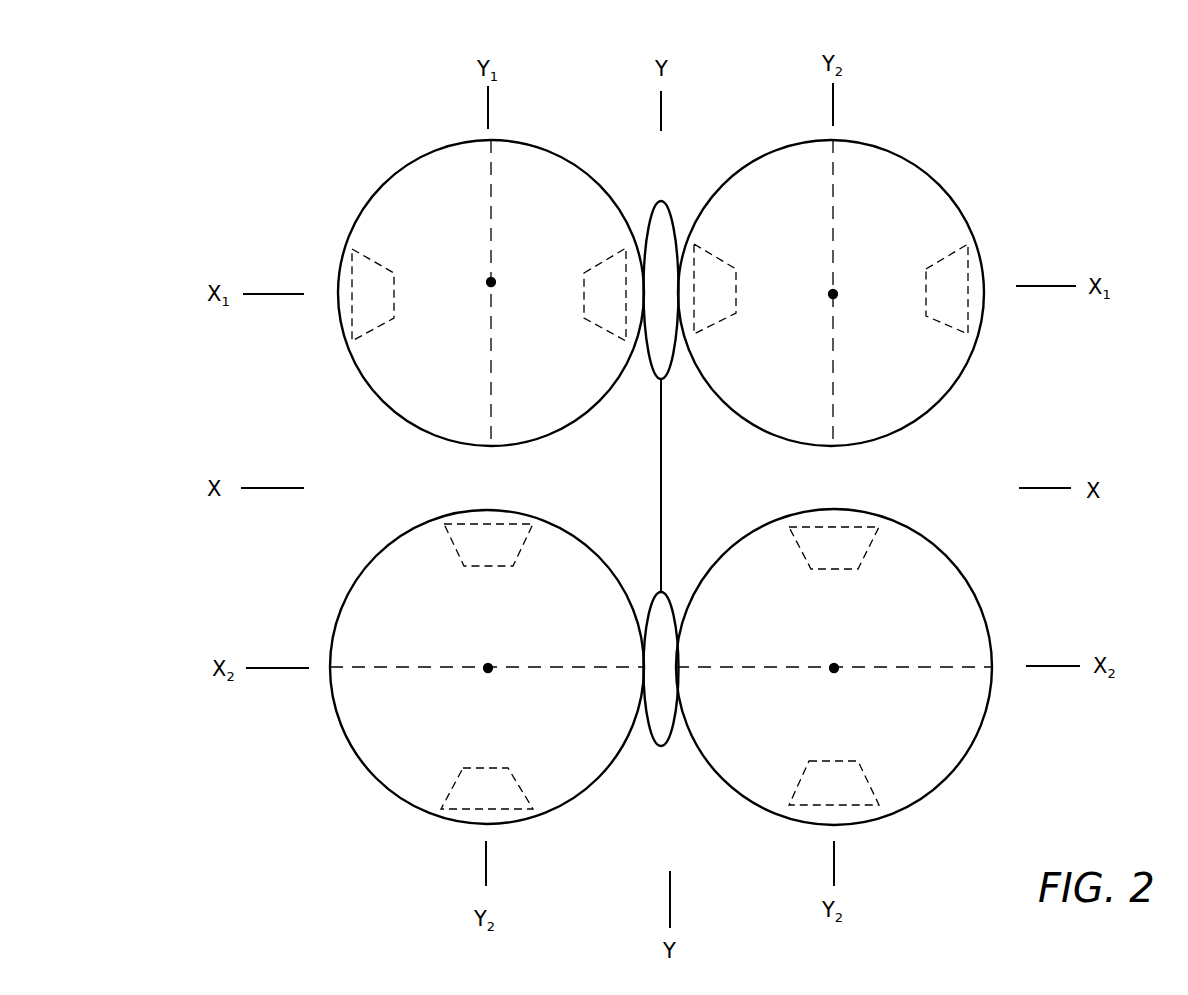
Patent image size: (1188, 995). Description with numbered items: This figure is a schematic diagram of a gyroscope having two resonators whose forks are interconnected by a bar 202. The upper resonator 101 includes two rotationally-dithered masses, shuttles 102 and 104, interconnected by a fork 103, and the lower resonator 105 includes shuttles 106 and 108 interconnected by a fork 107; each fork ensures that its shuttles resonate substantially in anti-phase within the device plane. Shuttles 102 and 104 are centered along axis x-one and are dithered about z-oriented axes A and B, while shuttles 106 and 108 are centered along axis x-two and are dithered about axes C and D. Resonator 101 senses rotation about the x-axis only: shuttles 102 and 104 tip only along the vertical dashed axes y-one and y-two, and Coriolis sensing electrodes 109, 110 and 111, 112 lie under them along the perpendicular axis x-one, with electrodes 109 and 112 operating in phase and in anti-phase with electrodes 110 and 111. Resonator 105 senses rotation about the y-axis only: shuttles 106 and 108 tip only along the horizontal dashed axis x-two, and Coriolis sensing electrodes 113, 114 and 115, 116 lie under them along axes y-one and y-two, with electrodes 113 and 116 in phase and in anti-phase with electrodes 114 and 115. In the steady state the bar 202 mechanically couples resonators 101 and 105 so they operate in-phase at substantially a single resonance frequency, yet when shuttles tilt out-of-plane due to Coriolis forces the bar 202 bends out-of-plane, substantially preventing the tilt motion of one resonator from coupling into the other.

The resonator 101 is at (236, 138).
The shuttle 102 is at (383, 182).
The fork 103 is at (660, 200).
The shuttle 104 is at (920, 165).
The resonator 105 is at (290, 828).
The shuttle 106 is at (476, 667).
The fork 107 is at (660, 745).
The shuttle 108 is at (859, 667).
The Coriolis sensing electrode 109 is at (373, 295).
The Coriolis sensing electrode 110 is at (605, 294).
The Coriolis sensing electrode 111 is at (715, 289).
The Coriolis sensing electrode 112 is at (947, 289).
The Coriolis sensing electrode 113 is at (488, 545).
The Coriolis sensing electrode 114 is at (487, 788).
The Coriolis sensing electrode 115 is at (834, 548).
The Coriolis sensing electrode 116 is at (834, 783).
The bar 202 is at (699, 485).